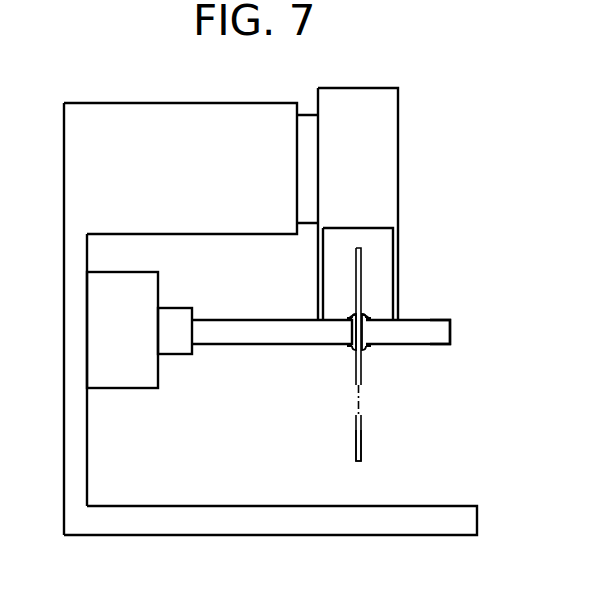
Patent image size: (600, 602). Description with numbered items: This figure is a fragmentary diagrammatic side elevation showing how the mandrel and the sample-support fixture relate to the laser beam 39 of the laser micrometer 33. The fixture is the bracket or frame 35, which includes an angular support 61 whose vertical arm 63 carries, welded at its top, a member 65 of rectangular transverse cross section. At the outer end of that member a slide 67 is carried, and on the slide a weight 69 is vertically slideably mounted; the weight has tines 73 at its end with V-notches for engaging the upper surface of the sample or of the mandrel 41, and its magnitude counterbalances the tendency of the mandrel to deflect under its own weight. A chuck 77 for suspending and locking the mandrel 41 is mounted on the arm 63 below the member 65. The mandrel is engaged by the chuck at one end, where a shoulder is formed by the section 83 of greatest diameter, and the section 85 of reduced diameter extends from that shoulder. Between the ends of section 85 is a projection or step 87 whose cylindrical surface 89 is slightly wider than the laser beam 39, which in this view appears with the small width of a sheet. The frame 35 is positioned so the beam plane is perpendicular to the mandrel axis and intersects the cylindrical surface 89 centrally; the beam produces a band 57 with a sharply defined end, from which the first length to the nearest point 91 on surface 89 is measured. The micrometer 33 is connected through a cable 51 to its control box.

The bracket or frame 35 is at (270, 309).
The member of rectangular transverse cross section 65 is at (202, 112).
The vertical arm 63 is at (87, 450).
The angular support 61 is at (64, 536).
The slide 67 is at (308, 115).
The laser micrometer 33 is at (399, 204).
The weight 69 is at (393, 157).
The tines 73 is at (393, 284).
The chuck 77 is at (126, 387).
The section of still greater diameter 83 is at (178, 319).
The section of reduced diameter 85 is at (240, 324).
The mandrel 41 is at (453, 331).
The cylindrical surface 89 is at (352, 352).
The projection or step 87 is at (366, 352).
The nearest point on the cylindrical surface 91 is at (353, 315).
The cable 51 is at (355, 258).
The band 57 is at (355, 425).
The laser beam 39 is at (362, 437).